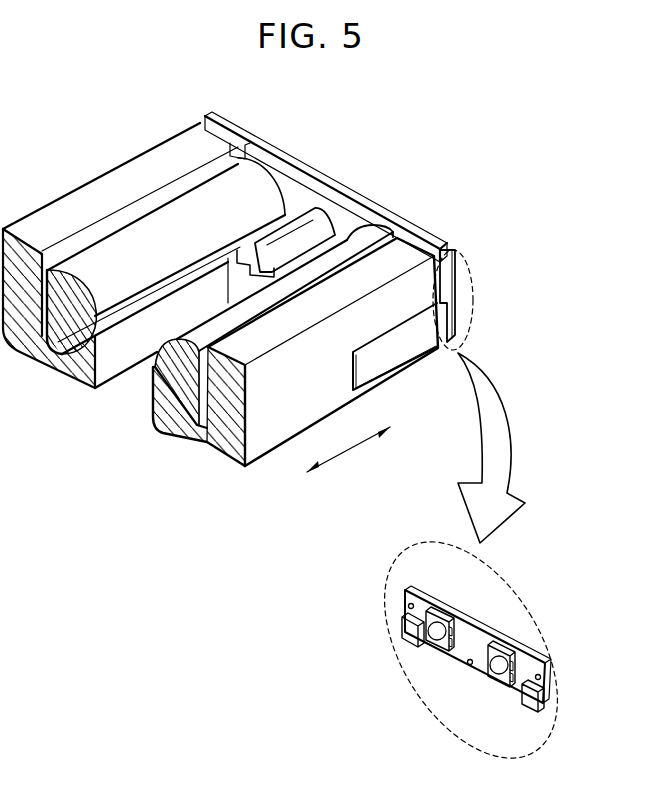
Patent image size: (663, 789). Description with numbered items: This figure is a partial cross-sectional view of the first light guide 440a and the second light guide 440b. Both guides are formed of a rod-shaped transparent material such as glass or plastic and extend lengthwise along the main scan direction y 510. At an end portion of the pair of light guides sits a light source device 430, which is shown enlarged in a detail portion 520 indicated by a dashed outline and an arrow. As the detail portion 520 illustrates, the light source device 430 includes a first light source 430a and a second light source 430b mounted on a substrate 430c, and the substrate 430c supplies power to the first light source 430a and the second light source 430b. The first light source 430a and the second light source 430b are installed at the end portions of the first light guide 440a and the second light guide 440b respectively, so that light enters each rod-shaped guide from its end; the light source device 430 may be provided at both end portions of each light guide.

The first light guide 440a is at (140, 237).
The second light guide 440b is at (209, 324).
The light source device 430 is at (460, 303).
The first light source 430a is at (435, 635).
The second light source 430b is at (500, 668).
The substrate 430c is at (490, 628).
The main scan direction y 510 is at (362, 470).
The portion 520 is at (475, 650).